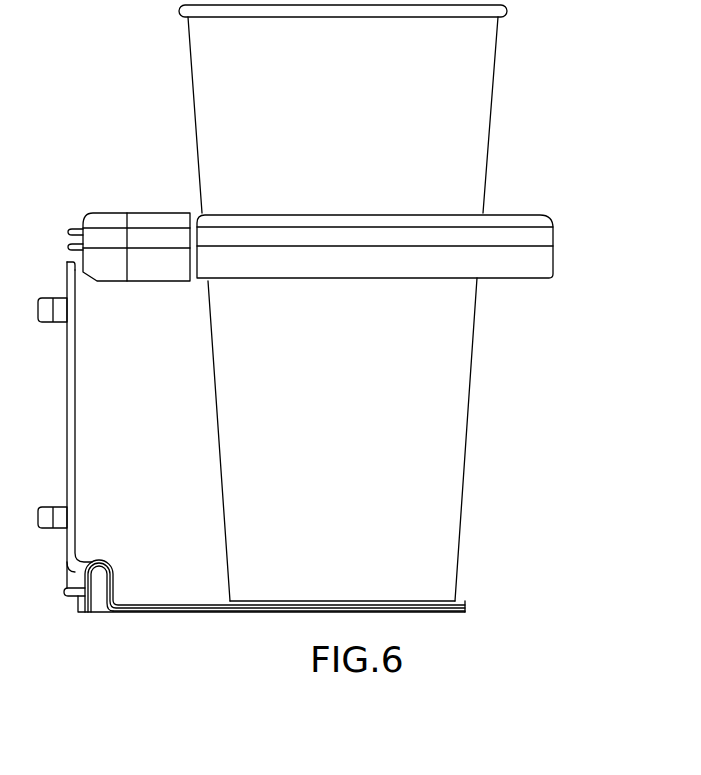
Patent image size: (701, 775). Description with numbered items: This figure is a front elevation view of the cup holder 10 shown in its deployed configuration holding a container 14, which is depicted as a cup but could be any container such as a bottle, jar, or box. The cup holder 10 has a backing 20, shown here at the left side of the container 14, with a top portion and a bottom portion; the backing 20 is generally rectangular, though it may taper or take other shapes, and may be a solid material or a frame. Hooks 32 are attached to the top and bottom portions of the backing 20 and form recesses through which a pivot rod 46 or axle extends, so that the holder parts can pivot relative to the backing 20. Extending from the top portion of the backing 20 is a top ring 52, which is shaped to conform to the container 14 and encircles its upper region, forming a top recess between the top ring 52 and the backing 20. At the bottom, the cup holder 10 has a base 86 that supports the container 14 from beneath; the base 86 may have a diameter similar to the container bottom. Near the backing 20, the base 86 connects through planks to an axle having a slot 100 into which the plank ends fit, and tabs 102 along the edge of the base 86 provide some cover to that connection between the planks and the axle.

The cup holder 10 is at (522, 493).
The container 14 is at (488, 153).
The backing 20 is at (67, 415).
The hooks 32 is at (67, 231).
The pivot rod 46 is at (68, 247).
The top ring 52 is at (553, 245).
The base 86 is at (233, 612).
The slot 100 is at (80, 567).
The tabs 102 is at (100, 605).